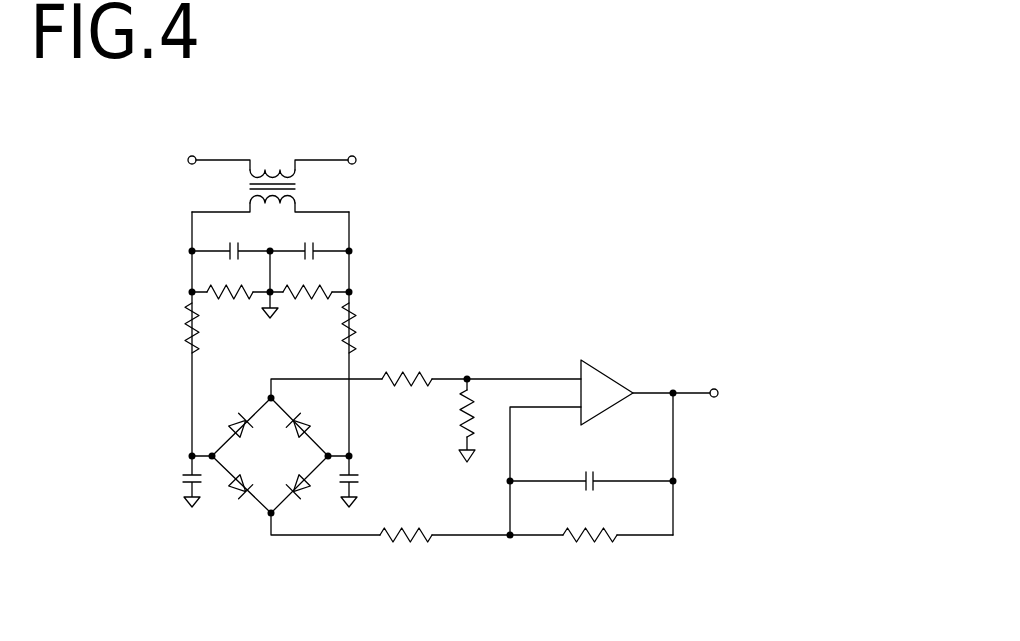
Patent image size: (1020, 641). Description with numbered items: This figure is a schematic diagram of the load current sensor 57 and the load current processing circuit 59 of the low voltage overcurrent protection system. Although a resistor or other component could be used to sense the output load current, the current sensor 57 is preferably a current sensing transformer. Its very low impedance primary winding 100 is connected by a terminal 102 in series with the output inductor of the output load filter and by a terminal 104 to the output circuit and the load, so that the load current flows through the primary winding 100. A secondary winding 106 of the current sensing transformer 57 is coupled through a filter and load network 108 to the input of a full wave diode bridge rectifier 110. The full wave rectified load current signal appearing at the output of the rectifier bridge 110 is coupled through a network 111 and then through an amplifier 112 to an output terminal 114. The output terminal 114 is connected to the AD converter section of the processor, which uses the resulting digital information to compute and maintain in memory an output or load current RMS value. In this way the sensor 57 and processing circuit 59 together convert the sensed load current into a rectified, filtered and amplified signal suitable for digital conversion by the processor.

The load current sensor 57 is at (420, 153).
The load current processing circuit 59 is at (676, 313).
The primary winding 100 is at (272, 166).
The terminal 102 is at (192, 156).
The terminal 104 is at (355, 156).
The secondary winding 106 is at (300, 205).
The filter and load network 108 is at (350, 297).
The full wave diode bridge rectifier 110 is at (250, 500).
The network 111 is at (452, 378).
The amplifier 112 is at (602, 388).
The output terminal 114 is at (717, 398).